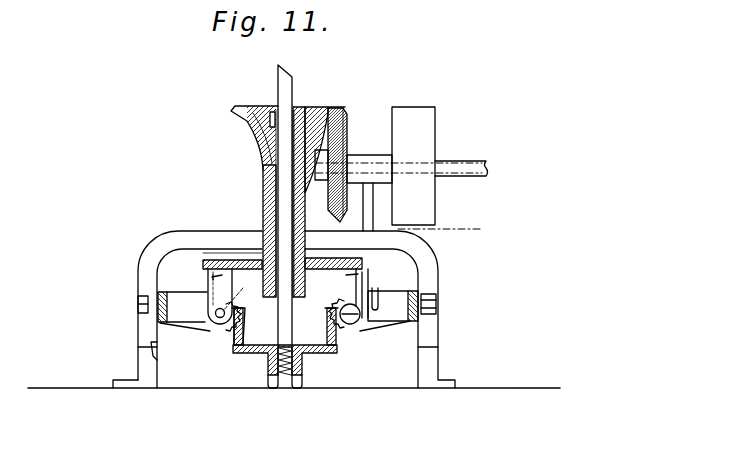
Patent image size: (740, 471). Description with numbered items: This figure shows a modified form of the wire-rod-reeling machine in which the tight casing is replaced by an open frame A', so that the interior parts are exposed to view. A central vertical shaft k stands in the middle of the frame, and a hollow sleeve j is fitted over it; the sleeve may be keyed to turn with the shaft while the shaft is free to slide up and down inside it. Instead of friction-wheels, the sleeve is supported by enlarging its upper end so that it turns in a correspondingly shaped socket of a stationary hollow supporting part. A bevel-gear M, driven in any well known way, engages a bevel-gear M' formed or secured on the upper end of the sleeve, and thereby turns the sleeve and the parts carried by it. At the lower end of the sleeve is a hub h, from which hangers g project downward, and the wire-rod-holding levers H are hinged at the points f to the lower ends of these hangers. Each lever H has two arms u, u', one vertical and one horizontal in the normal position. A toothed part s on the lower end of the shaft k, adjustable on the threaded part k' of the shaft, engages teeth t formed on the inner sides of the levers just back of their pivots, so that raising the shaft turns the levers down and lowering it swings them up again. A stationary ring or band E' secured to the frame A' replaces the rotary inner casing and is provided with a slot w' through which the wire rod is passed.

The open frame A' is at (283, 309).
The central vertical shaft k is at (292, 220).
The threaded part k' is at (285, 341).
The hollow shaft or sleeve j is at (262, 204).
The bevel-gear M is at (348, 165).
The bevel-gear M' is at (319, 192).
The hub h is at (237, 261).
The stationary ring or band E' is at (288, 297).
The wire-rod-holding levers H is at (219, 327).
The hinge points f is at (232, 299).
The teeth t is at (230, 333).
The hangers g is at (217, 277).
The vertical arm u is at (374, 287).
The horizontal arm u' is at (285, 330).
The slot or opening w' is at (379, 291).
The toothed part s is at (255, 341).